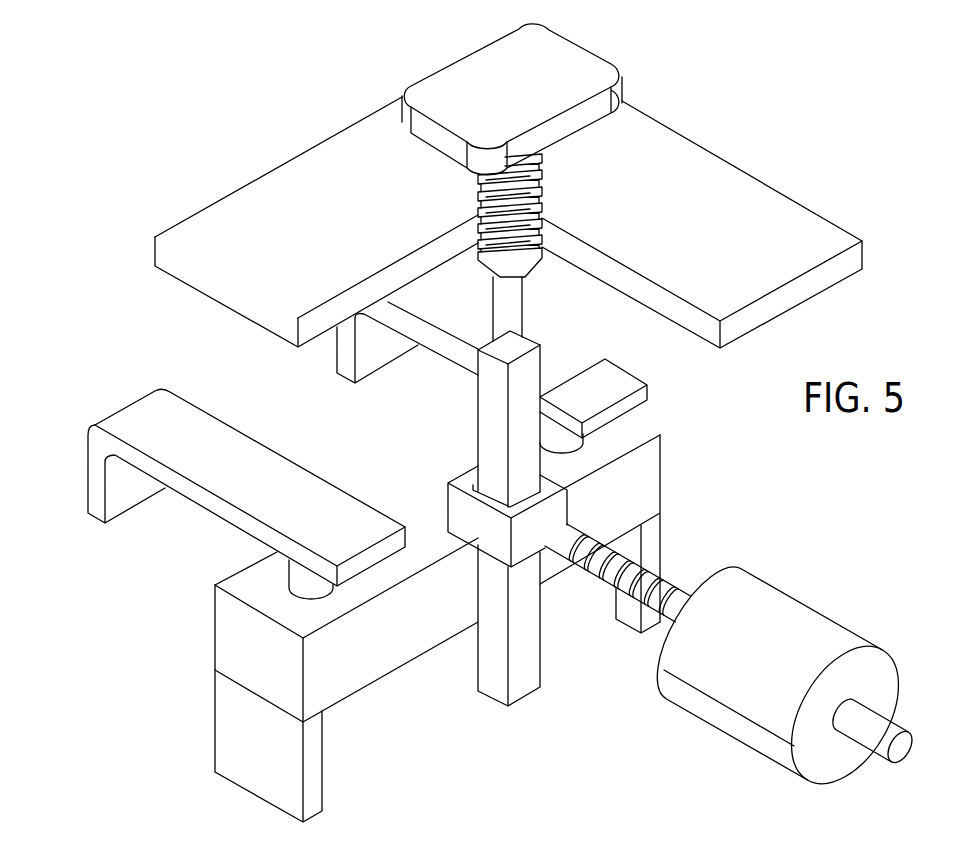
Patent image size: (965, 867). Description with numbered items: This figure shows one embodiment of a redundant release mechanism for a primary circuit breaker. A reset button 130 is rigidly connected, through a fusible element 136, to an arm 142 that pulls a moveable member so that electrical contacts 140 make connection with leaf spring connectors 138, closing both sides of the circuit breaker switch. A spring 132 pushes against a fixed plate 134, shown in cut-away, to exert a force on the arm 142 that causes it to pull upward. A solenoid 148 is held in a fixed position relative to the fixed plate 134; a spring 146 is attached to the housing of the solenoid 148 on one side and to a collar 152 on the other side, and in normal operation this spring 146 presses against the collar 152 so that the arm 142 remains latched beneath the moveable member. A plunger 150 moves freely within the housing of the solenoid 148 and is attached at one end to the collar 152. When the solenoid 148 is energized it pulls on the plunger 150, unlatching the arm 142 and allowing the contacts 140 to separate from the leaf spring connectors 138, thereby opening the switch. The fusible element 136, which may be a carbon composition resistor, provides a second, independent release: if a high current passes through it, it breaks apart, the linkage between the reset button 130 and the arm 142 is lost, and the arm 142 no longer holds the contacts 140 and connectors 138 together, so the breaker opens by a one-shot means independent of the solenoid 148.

The reset button 130 is at (570, 78).
The spring 132 is at (547, 190).
The fixed plate 134 is at (718, 180).
The fusible element 136 is at (515, 308).
The leaf spring connectors 138 is at (443, 327).
The electrical contacts 140 is at (558, 436).
The arm 142 is at (487, 680).
The spring 146 is at (608, 598).
The solenoid 148 is at (787, 602).
The plunger 150 is at (890, 733).
The collar 152 is at (452, 508).